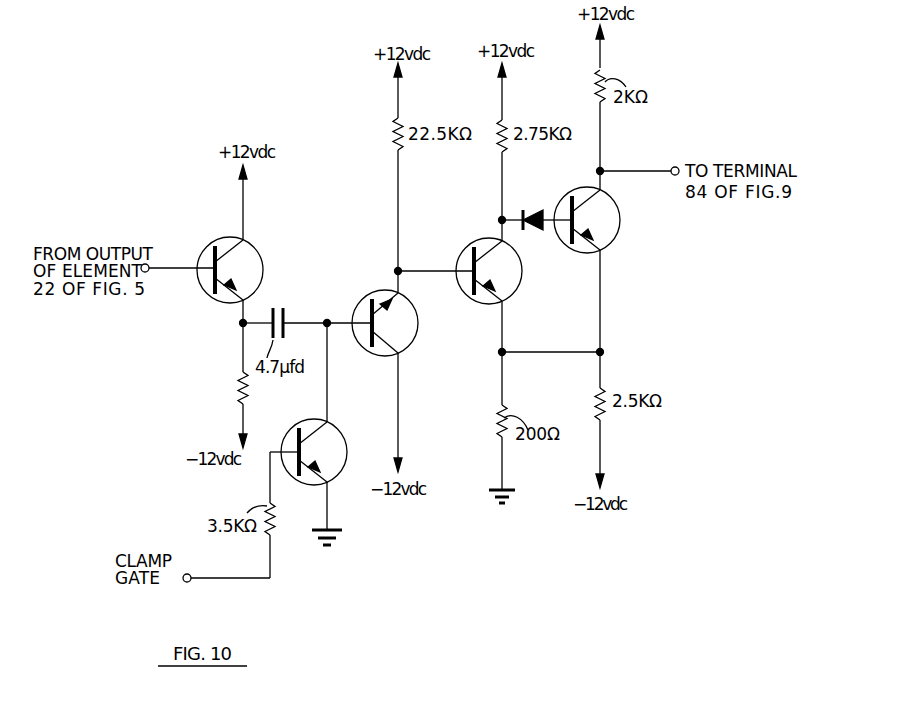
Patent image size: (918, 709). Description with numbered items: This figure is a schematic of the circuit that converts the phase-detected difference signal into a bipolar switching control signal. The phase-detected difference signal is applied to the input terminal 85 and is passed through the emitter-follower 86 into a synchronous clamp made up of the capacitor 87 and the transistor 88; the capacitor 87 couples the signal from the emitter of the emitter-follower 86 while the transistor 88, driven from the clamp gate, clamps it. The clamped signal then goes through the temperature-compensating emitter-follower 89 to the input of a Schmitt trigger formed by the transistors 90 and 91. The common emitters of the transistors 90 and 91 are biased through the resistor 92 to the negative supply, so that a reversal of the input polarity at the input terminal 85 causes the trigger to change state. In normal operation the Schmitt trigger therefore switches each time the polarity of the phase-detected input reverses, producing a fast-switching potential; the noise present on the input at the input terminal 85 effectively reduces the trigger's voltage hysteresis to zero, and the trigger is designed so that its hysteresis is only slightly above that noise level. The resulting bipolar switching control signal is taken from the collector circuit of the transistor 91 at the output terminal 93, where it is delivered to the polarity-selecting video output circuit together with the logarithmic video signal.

The input terminal 85 is at (147, 273).
The emitter-follower 86 is at (243, 275).
The capacitor 87 is at (286, 335).
The transistor 88 is at (333, 448).
The temperature-compensating emitter-follower 89 is at (402, 322).
The transistor 90 is at (503, 279).
The transistor 91 is at (603, 224).
The resistor 92 is at (604, 416).
The output terminal to terminal 84 of FIG. 9 93 is at (671, 168).